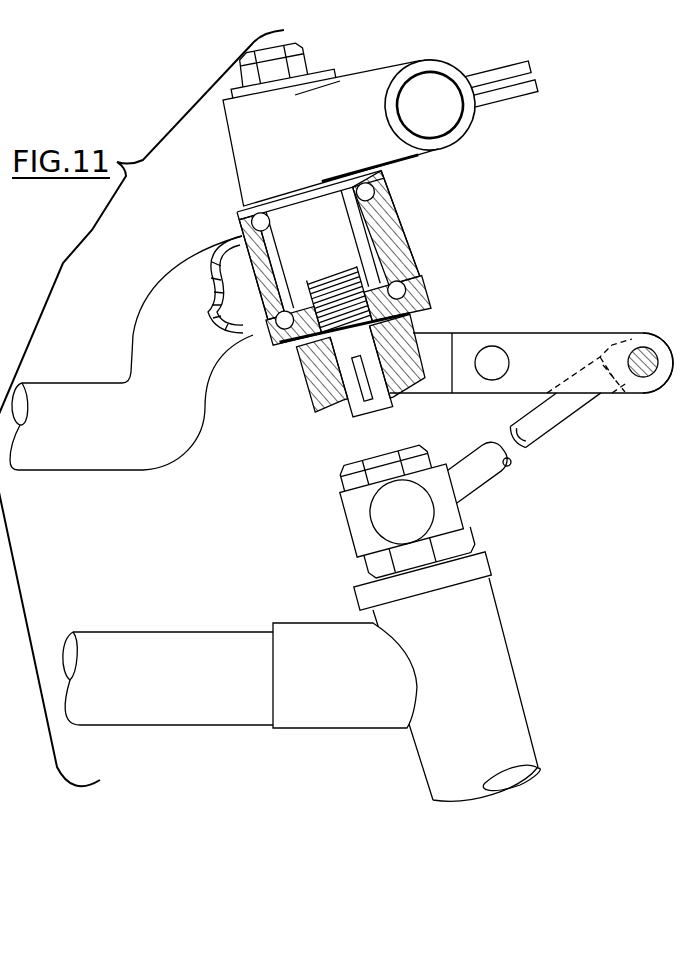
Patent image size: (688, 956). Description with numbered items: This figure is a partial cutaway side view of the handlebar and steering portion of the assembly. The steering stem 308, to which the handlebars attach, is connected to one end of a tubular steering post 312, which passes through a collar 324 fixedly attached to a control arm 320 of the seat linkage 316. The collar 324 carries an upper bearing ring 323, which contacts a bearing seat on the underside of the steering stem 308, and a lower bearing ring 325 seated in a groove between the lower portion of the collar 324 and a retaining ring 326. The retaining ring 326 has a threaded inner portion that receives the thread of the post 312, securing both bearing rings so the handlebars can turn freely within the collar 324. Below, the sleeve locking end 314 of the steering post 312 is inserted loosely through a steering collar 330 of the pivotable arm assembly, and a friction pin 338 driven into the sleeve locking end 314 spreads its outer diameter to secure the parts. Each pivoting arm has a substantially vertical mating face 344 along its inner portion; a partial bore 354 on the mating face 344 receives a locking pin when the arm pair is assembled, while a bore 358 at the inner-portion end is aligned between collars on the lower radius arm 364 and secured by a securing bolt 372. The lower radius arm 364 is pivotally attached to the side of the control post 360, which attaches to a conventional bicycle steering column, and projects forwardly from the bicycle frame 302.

The bicycle frame 302 is at (198, 713).
The steering stem 308 is at (358, 83).
The steering post 312 is at (305, 228).
The sleeve locking end 314 is at (348, 388).
The seat linkage 316 is at (170, 437).
The control arm 320 is at (88, 447).
The upper bearing ring 323 is at (372, 190).
The collar 324 is at (397, 233).
The lower bearing ring 325 is at (405, 290).
The retaining ring 326 is at (405, 303).
The steering collar 330 is at (306, 370).
The friction pin 338 is at (363, 415).
The mating face 344 is at (585, 335).
The bore 354 is at (498, 352).
The bore 358 is at (651, 327).
The control post 360 is at (353, 508).
The lower radius arm 364 is at (547, 432).
The securing bolt 372 is at (646, 372).